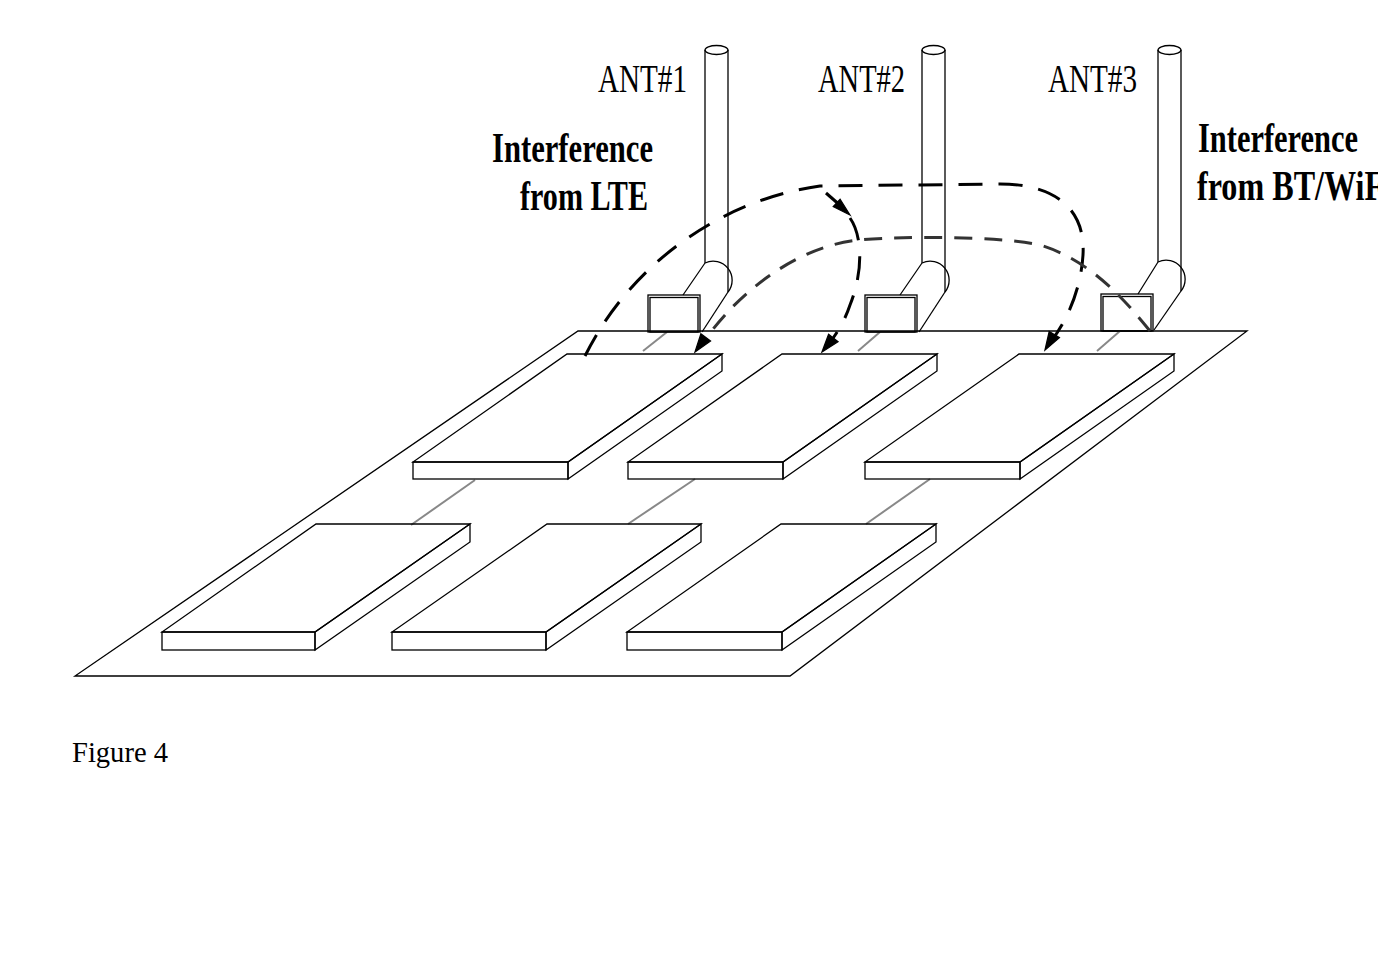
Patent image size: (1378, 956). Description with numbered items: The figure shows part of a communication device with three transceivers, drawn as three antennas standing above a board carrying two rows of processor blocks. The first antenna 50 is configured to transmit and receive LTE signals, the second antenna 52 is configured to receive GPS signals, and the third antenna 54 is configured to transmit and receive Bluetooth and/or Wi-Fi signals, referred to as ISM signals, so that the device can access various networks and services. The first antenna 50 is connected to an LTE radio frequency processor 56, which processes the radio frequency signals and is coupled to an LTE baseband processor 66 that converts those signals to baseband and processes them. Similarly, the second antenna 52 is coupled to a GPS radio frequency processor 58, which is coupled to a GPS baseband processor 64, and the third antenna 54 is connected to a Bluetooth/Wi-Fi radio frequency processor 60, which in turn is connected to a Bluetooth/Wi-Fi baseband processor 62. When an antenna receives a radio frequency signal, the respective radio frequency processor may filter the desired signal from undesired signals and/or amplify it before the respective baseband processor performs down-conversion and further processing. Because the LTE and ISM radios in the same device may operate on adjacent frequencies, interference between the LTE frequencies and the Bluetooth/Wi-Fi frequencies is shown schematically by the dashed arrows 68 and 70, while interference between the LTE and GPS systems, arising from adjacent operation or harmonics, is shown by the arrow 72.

The first antenna 50 is at (681, 189).
The second antenna 52 is at (902, 189).
The third antenna 54 is at (1130, 189).
The LTE radio frequency processor 56 is at (567, 416).
The GPS radio frequency processor 58 is at (782, 416).
The Bluetooth/Wi-Fi radio frequency processor 60 is at (1019, 416).
The Bluetooth/Wi-Fi baseband processor 62 is at (781, 587).
The GPS baseband processor 64 is at (546, 587).
The LTE baseband processor 66 is at (316, 587).
The arrow 68 is at (922, 282).
The arrow 70 is at (840, 265).
The arrow 72 is at (854, 272).